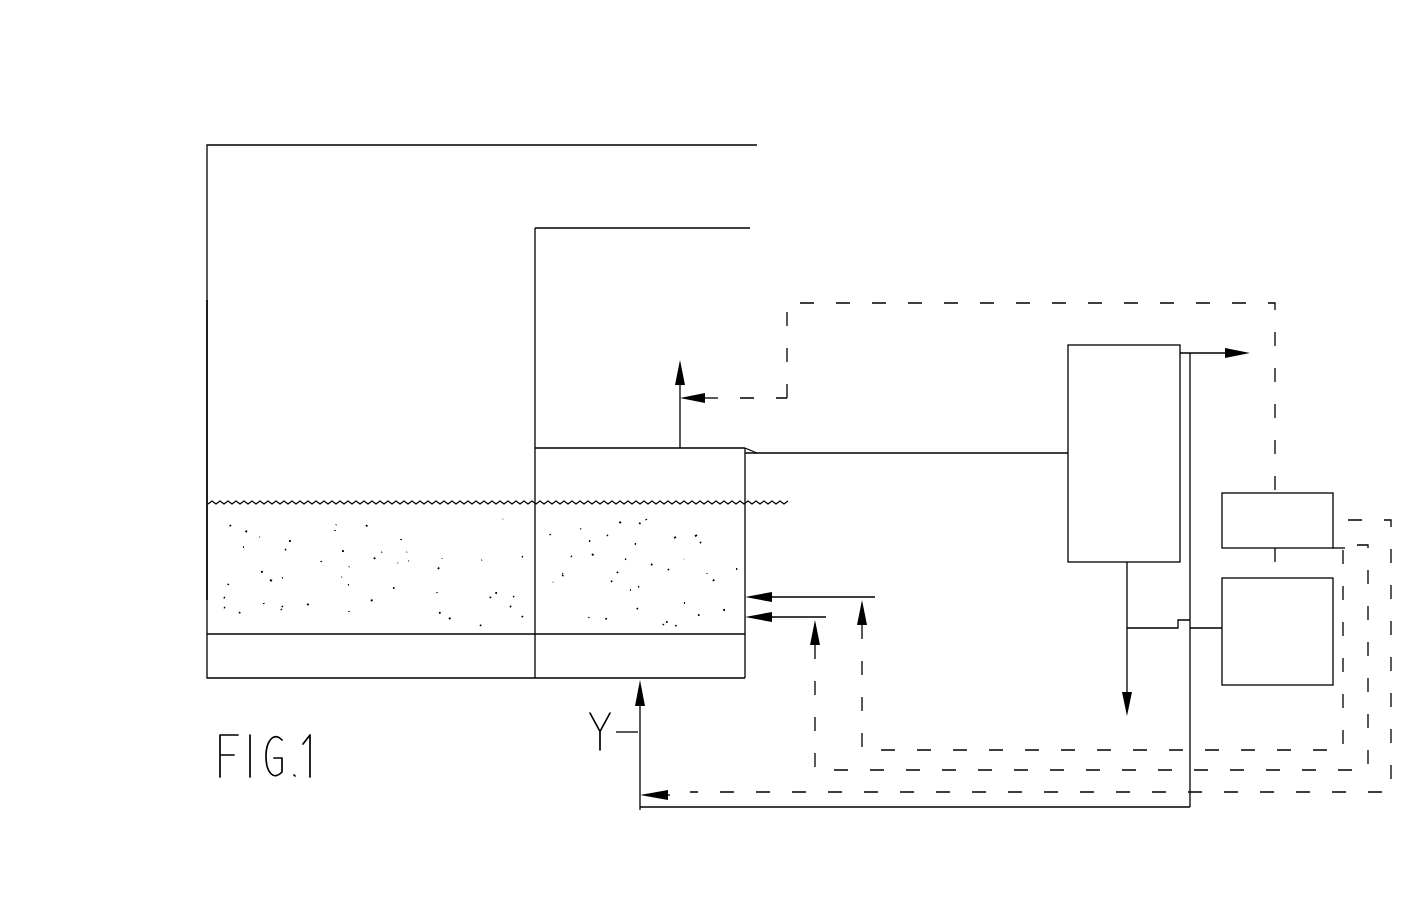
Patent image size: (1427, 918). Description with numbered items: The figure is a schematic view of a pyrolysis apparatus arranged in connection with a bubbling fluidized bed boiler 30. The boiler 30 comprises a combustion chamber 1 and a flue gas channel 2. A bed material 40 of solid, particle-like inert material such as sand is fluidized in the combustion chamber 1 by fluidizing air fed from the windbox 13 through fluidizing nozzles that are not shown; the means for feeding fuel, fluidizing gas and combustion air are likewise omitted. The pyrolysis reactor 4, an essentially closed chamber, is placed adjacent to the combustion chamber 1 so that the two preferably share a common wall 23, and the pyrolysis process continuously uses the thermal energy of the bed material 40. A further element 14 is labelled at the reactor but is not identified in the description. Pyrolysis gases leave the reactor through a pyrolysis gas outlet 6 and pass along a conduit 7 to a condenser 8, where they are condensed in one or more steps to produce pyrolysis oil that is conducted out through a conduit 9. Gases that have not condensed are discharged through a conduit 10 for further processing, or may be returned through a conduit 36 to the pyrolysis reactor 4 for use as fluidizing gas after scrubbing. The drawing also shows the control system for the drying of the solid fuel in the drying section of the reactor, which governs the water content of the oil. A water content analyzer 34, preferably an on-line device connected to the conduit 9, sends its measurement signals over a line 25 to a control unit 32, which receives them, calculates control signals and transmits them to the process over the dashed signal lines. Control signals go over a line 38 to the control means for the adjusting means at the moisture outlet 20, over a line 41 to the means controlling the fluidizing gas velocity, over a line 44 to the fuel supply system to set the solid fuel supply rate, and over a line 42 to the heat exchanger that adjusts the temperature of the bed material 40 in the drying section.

The combustion chamber 1 is at (254, 450).
The flue gas channel 2 is at (482, 357).
The pyrolysis reactor 4 is at (781, 563).
The pyrolysis gas outlet 6 is at (834, 386).
The conduit 7 is at (906, 394).
The condenser 8 is at (1084, 453).
The conduit 9 is at (1067, 638).
The conduit 10 is at (1215, 577).
The windbox 13 is at (476, 720).
The gas inlet 14 is at (811, 556).
The moisture outlet 20 is at (689, 404).
The common wall 23 is at (440, 383).
The line 25 is at (1334, 481).
The bubbling fluidized bed boiler 30 is at (619, 453).
The control unit 32 is at (1277, 520).
The water content analyzer 34 is at (1230, 631).
The conduit 36 is at (912, 770).
The line 38 is at (1031, 349).
The bed material 40 is at (462, 563).
The line 41 is at (1015, 626).
The line 42 is at (1089, 657).
The line 44 is at (1100, 647).